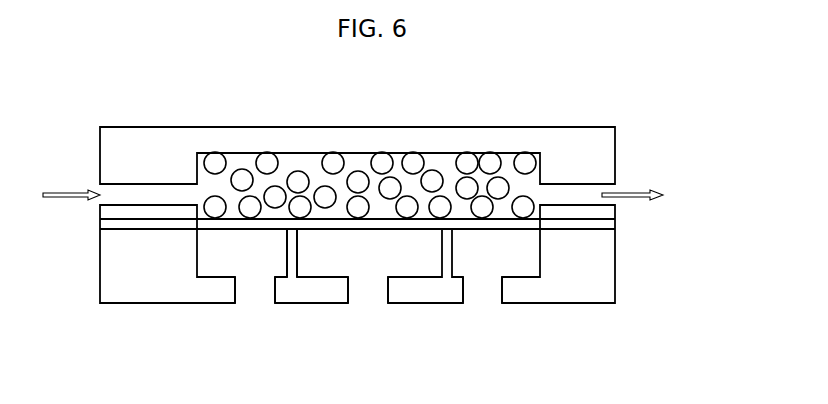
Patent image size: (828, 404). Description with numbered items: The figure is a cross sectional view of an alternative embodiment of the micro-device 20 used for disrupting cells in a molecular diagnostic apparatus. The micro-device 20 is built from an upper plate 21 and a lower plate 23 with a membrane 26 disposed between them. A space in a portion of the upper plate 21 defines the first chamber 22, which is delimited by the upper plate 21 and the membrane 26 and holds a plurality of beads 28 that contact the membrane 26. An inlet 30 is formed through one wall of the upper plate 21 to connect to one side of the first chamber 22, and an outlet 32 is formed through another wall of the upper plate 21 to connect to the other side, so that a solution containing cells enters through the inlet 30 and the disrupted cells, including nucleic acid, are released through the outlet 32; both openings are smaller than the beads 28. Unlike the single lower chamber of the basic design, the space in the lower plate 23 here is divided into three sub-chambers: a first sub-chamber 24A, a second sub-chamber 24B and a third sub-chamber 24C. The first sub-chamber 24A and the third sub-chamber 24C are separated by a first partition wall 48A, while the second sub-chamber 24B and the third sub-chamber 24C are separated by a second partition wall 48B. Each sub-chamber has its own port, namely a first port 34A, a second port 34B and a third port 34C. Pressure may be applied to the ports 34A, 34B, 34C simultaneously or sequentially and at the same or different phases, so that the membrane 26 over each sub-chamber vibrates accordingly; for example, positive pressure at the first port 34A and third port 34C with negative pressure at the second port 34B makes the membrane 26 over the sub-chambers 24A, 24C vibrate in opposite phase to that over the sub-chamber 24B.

The micro-device 20 is at (632, 122).
The upper plate 21 is at (617, 155).
The first chamber 22 is at (290, 165).
The lower plate 23 is at (612, 267).
The first sub-chamber 24A is at (213, 263).
The second sub-chamber 24B is at (522, 263).
The third sub-chamber 24C is at (327, 263).
The membrane 26 is at (617, 224).
The beads 28 is at (413, 167).
The inlet 30 is at (150, 195).
The outlet 32 is at (577, 195).
The first port 34A is at (255, 300).
The second port 34B is at (480, 303).
The third port 34C is at (368, 300).
The first partition wall 48A is at (287, 250).
The second partition wall 48B is at (442, 248).